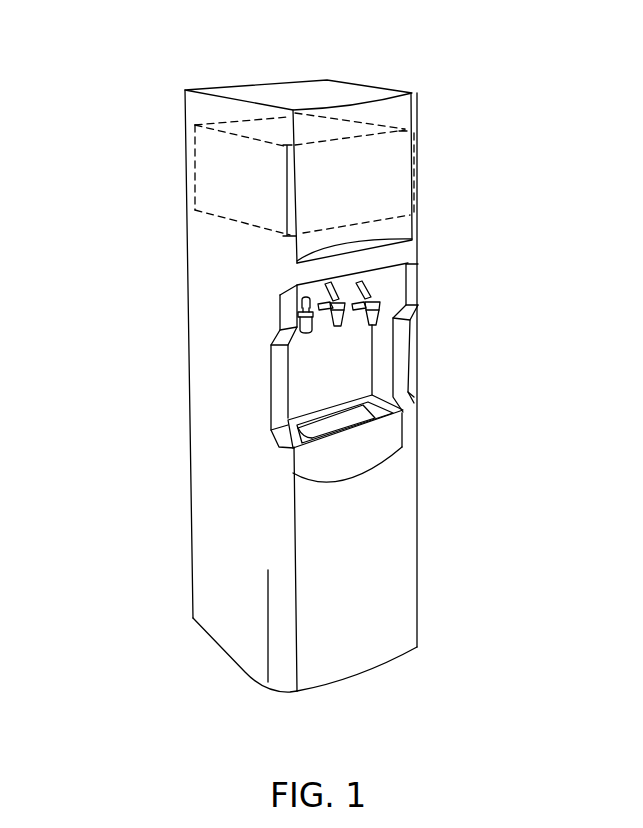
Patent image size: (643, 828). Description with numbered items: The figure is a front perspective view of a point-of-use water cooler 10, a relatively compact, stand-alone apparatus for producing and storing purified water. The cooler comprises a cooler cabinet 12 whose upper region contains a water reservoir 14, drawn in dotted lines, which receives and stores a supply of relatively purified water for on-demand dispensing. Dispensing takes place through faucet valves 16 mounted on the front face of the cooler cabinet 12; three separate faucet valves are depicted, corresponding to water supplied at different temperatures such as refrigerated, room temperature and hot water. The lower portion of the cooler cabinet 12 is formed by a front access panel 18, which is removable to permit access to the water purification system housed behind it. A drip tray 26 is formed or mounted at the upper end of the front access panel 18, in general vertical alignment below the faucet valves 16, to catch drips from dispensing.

The point-of-use water cooler 10 is at (153, 247).
The cooler cabinet 12 is at (207, 477).
The water reservoir 14 is at (400, 173).
The faucet valves 16 is at (343, 322).
The front access panel 18 is at (375, 583).
The drip tray 26 is at (403, 410).